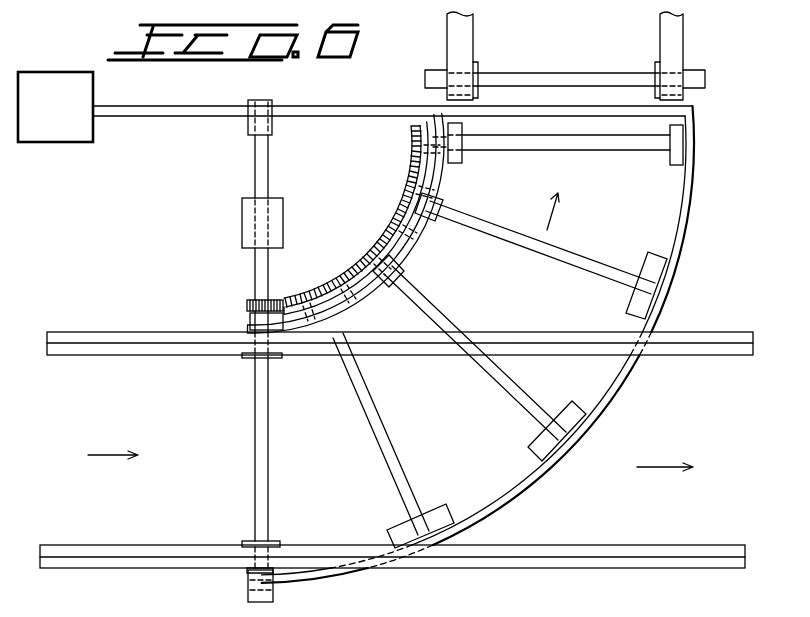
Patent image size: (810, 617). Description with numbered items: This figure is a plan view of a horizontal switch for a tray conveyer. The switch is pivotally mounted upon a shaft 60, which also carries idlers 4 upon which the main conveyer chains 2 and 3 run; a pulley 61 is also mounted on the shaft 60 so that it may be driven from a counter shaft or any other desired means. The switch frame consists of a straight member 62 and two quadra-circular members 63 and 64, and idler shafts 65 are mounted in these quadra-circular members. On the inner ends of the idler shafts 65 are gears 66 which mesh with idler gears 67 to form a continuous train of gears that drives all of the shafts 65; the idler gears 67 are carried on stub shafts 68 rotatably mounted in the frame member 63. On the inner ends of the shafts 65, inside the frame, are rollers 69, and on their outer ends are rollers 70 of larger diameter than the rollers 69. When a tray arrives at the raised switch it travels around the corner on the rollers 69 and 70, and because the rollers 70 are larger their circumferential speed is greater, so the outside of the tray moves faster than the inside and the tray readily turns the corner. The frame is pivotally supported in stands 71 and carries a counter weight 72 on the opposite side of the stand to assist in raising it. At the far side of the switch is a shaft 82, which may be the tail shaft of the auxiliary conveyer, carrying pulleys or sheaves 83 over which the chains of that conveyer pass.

The conveyer chain 2 is at (138, 347).
The conveyer chain 3 is at (122, 548).
The idler 4 is at (273, 542).
The shaft 60 is at (254, 276).
The pulley 61 is at (240, 218).
The straight member 62 is at (328, 108).
The quadra-circular member 63 is at (415, 255).
The quadra-circular member 64 is at (628, 378).
The idler shaft 65 is at (395, 460).
The gear 66 is at (413, 197).
The idler gear 67 is at (347, 280).
The stub shaft 68 is at (367, 297).
The roller 69 is at (452, 207).
The roller 70 is at (648, 272).
The stand 71 is at (248, 127).
The counter weight 72 is at (85, 90).
The shaft 82 is at (532, 75).
The pulley 83 is at (473, 72).